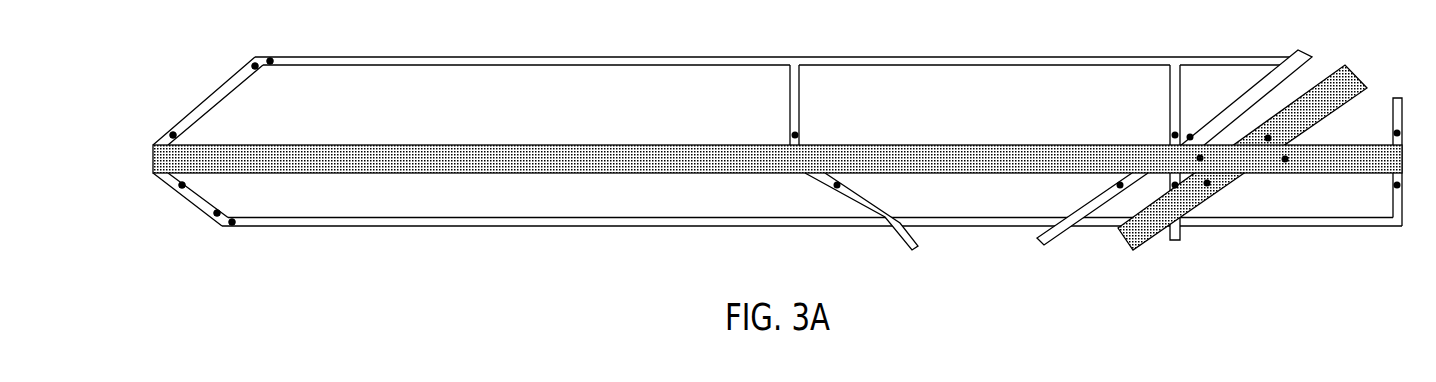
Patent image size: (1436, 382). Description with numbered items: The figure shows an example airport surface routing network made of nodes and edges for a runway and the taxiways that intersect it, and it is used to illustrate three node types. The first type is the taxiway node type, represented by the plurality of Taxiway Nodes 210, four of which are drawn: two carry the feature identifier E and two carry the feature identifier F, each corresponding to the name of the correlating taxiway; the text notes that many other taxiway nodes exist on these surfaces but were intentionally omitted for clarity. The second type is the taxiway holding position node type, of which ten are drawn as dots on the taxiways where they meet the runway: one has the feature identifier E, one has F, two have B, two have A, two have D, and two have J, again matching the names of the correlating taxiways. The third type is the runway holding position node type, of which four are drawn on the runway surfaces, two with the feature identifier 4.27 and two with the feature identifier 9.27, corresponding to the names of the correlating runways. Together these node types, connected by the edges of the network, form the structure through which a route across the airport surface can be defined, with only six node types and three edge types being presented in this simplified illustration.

The taxiway nodes 210 is at (237, 216).
The feature identifier E is at (217, 88).
The feature identifier F is at (200, 215).
The feature identifier B is at (807, 165).
The feature identifier A is at (1164, 159).
The feature identifier D is at (1140, 154).
The feature identifier J is at (1389, 162).
The feature identifier 9.27 is at (1243, 160).
The feature identifier 4.27 is at (1241, 158).